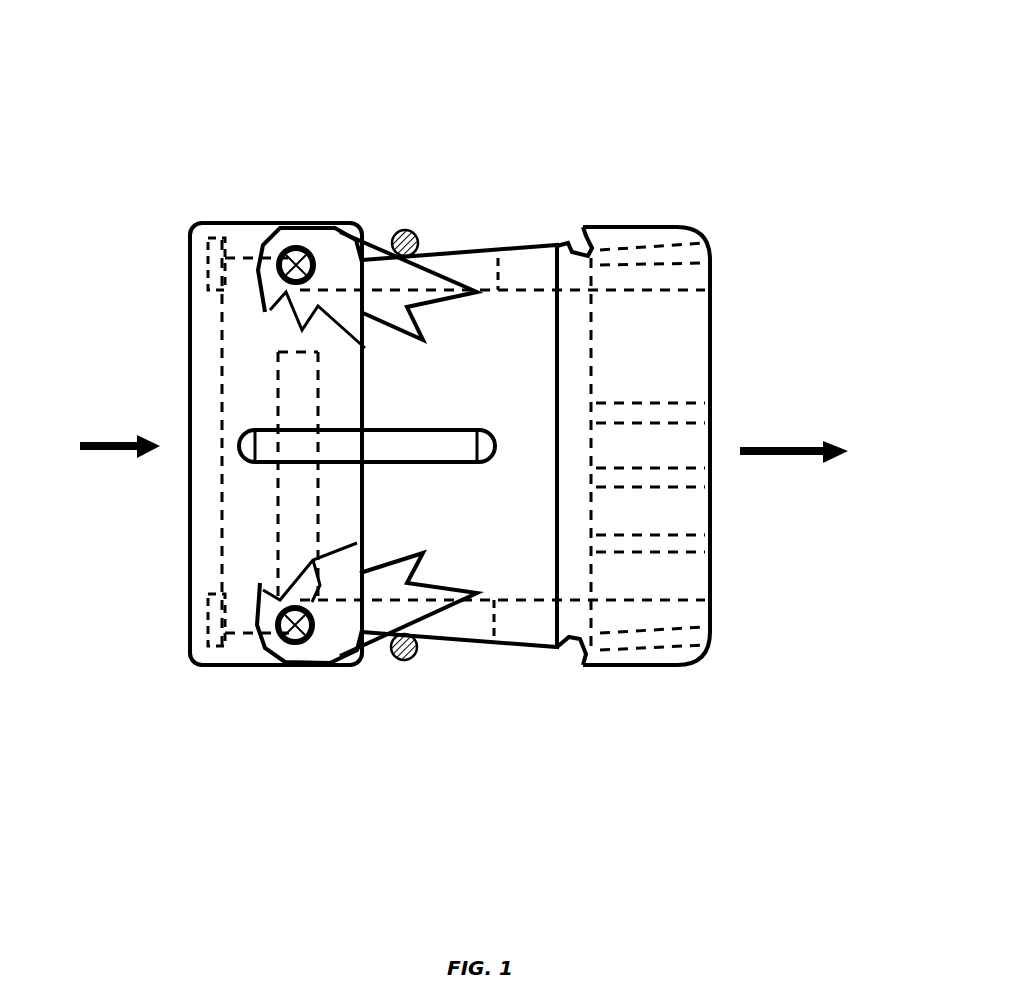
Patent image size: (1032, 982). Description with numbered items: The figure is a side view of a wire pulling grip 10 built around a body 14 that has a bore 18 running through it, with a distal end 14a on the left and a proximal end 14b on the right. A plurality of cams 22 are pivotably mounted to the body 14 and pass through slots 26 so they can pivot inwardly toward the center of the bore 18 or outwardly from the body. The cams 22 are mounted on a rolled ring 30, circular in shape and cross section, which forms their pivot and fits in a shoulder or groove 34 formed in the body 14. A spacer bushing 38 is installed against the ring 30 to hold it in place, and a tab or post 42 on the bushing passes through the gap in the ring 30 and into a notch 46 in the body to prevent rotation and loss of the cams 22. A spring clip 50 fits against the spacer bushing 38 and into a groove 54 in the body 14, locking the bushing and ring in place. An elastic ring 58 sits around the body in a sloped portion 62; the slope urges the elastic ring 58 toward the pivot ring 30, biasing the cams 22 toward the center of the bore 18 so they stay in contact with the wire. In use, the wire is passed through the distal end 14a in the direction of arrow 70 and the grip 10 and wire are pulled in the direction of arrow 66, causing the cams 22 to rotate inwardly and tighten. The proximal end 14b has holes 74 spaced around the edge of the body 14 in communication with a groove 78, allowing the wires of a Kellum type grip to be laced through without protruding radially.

The wire pulling grip 10 is at (700, 68).
The body 14 is at (658, 377).
The distal end 14a is at (207, 492).
The proximal end 14b is at (690, 571).
The bore 18 is at (510, 541).
The cams 22 is at (332, 250).
The slots 26 is at (472, 275).
The rolled ring 30 is at (290, 237).
The shoulder or groove 34 is at (290, 256).
The spacer bushing 38 is at (240, 340).
The tab or post 42 is at (295, 334).
The notch 46 is at (325, 353).
The spring clip 50 is at (205, 243).
The groove 54 is at (210, 238).
The elastic ring 58 is at (402, 231).
The sloped portion 62 is at (522, 228).
The arrow 66 is at (805, 446).
The arrow 70 is at (100, 440).
The holes 74 is at (628, 255).
The groove 78 is at (575, 240).